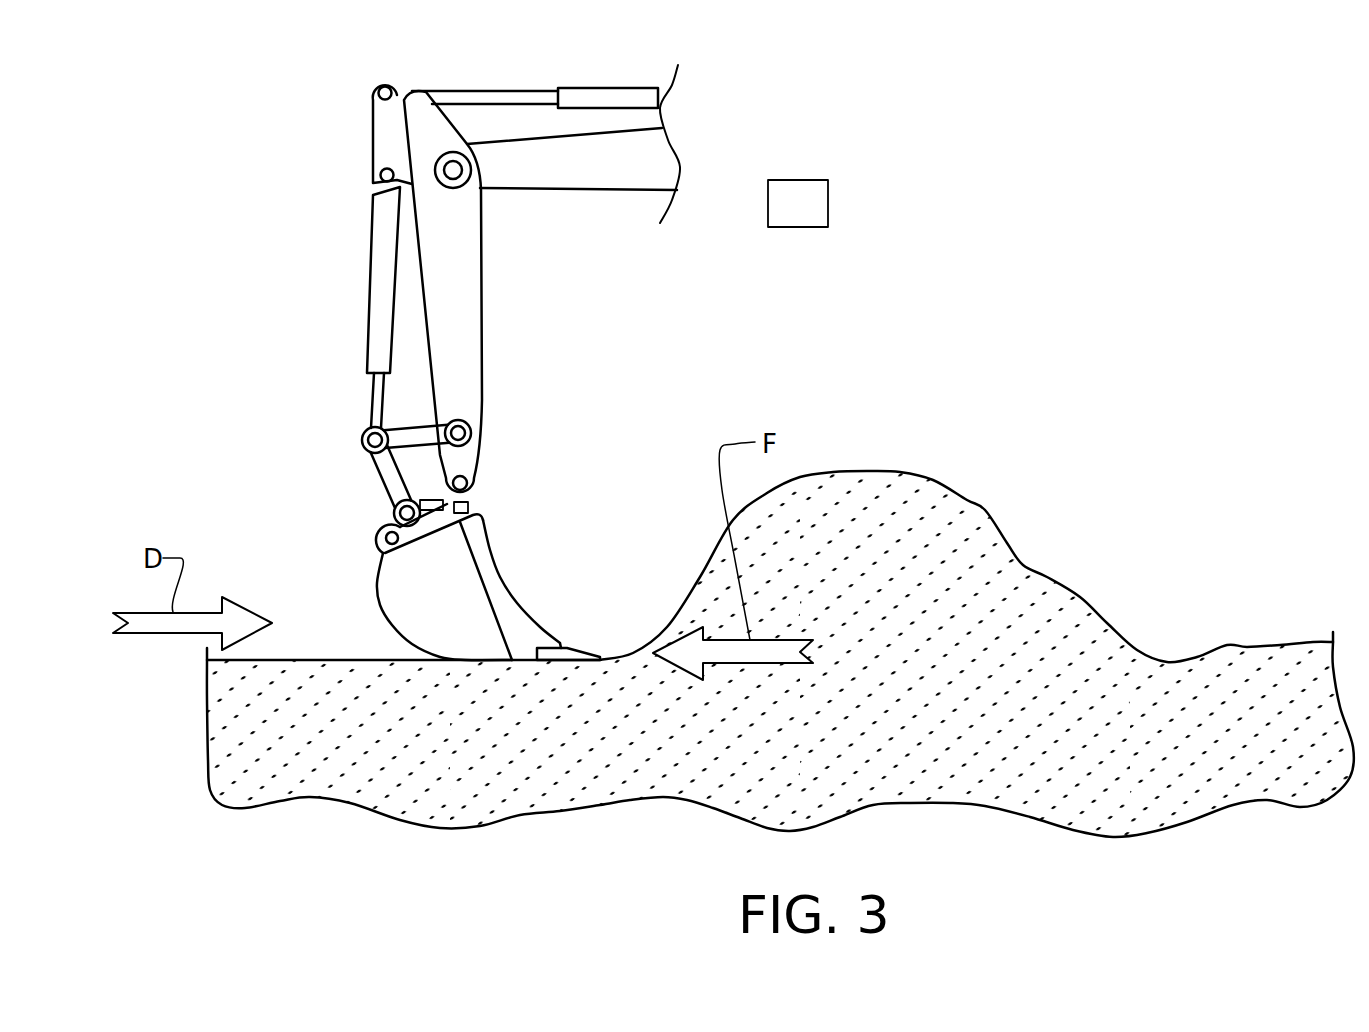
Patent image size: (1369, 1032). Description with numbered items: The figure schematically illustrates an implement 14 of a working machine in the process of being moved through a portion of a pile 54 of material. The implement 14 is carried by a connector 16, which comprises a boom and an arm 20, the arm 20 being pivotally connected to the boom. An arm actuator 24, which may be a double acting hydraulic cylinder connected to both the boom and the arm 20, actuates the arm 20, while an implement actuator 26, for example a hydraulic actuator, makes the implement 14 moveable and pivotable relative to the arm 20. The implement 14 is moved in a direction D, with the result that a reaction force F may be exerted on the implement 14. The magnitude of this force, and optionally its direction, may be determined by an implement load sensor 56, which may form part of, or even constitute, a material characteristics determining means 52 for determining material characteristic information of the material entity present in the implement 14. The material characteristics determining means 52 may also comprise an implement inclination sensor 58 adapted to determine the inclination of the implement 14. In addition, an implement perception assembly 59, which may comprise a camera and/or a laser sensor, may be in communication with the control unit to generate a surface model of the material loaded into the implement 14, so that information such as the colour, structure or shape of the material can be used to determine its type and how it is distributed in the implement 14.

The implement 14 is at (376, 639).
The connector 16 is at (302, 63).
The arm 20 is at (317, 233).
The arm actuator 24 is at (613, 100).
The implement actuator 26 is at (380, 338).
The material characteristics determining means 52 is at (521, 465).
The pile 54 is at (890, 507).
The implement load sensor 56 is at (432, 507).
The implement inclination sensor 58 is at (470, 510).
The implement perception assembly 59 is at (783, 221).